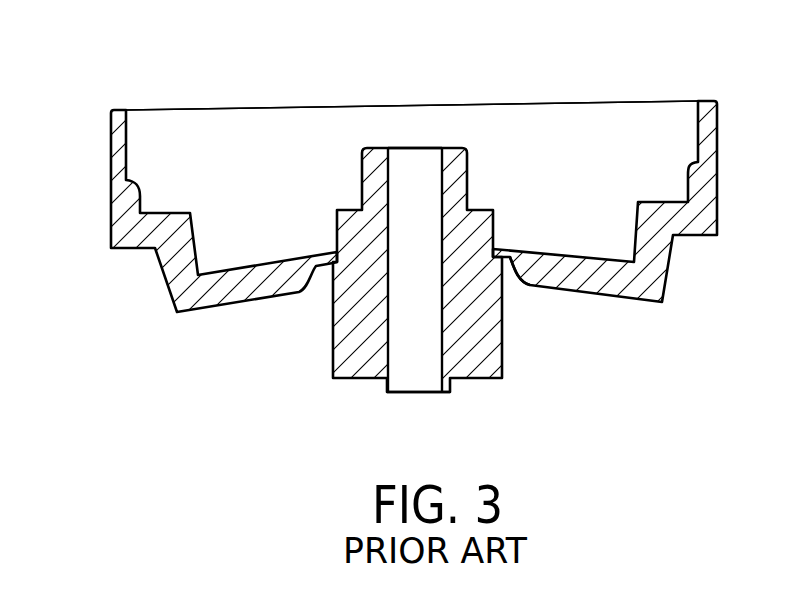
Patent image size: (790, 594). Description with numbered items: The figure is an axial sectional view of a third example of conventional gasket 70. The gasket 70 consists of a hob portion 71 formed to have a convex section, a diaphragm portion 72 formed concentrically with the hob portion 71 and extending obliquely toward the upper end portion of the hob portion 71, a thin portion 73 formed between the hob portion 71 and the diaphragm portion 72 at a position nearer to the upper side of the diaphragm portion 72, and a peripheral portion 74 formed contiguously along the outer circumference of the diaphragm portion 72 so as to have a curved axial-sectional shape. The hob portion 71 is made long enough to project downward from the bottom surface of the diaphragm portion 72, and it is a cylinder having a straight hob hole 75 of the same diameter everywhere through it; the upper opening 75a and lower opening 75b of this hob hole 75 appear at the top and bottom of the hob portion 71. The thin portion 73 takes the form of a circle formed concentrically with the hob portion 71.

The gasket 70 is at (225, 100).
The hob portion 71 is at (333, 328).
The diaphragm portion 72 is at (619, 287).
The thin portion 73 is at (507, 258).
The peripheral portion 74 is at (112, 151).
The hob hole 75 is at (394, 343).
The upper opening of through hole 75a is at (429, 147).
The lower opening of through hole 75b is at (438, 394).